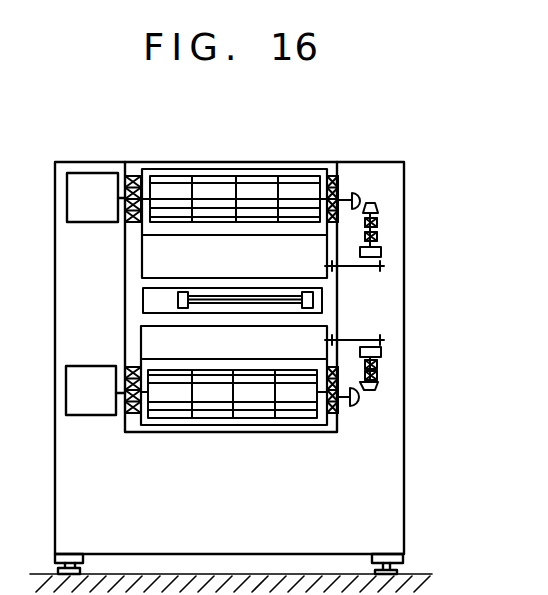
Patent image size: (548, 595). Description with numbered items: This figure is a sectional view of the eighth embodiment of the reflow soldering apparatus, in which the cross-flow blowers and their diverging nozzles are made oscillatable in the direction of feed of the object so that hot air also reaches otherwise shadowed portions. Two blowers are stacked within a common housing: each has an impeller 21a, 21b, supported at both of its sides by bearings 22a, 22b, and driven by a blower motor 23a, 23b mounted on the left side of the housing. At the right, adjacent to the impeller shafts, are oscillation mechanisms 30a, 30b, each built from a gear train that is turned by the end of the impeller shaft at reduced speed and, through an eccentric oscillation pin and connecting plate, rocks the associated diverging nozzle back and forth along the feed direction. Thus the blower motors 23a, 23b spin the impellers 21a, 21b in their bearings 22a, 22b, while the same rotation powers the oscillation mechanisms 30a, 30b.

The impeller 21a is at (229, 175).
The impeller 21b is at (250, 418).
The bearings 22a is at (127, 175).
The bearings 22b is at (121, 418).
The blower motor 23a is at (85, 171).
The blower motor 23b is at (86, 415).
The oscillation mechanism 30a is at (378, 207).
The oscillation mechanism 30b is at (378, 386).